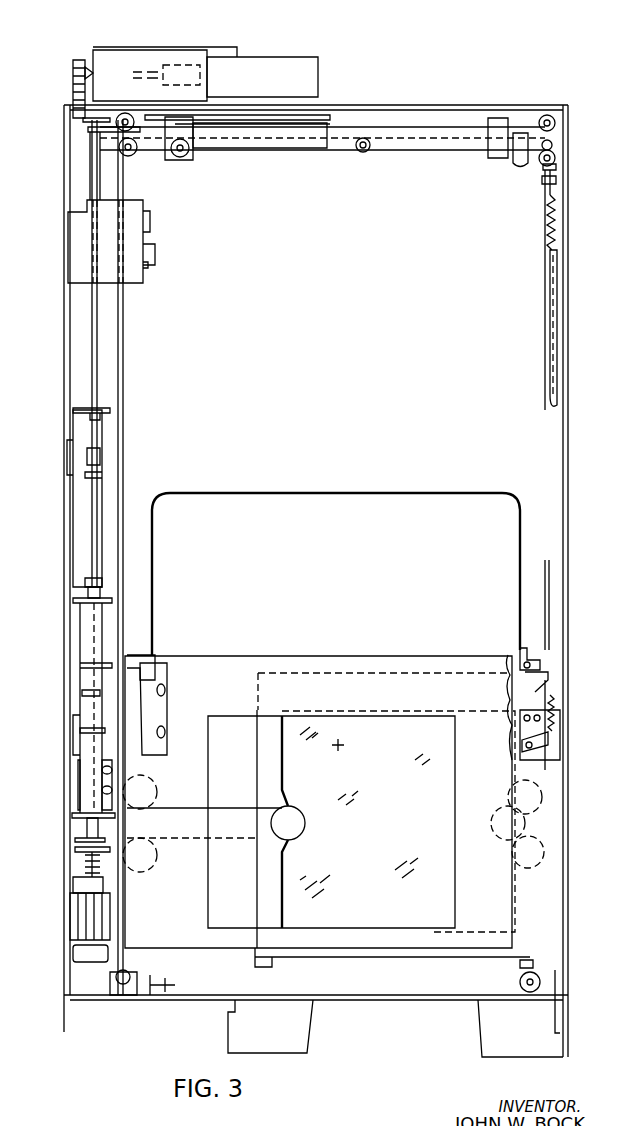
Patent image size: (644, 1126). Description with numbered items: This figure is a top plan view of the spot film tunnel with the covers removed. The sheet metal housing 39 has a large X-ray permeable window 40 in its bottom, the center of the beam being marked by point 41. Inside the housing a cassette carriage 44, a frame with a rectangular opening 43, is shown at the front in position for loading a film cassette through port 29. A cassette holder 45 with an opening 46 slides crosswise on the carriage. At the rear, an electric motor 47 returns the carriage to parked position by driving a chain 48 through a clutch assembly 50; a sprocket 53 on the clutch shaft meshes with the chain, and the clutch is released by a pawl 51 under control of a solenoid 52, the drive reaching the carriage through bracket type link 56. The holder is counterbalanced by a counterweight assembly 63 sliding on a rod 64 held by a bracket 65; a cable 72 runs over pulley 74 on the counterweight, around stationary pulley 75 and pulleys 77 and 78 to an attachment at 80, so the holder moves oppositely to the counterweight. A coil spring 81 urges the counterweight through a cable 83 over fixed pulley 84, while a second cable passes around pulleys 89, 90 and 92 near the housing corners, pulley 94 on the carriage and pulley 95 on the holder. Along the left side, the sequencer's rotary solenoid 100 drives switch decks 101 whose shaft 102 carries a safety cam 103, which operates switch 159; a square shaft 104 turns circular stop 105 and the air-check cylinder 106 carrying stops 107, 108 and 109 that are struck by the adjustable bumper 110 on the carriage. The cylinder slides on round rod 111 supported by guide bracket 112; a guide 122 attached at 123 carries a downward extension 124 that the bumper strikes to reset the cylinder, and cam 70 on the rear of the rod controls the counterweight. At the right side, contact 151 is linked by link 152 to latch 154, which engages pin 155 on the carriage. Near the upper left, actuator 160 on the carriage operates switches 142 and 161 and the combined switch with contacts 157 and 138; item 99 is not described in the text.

The port 29 is at (474, 1004).
The sheet metal housing 39 is at (66, 374).
The X-ray permeable window 40 is at (306, 494).
The center point 41 is at (340, 745).
The rectangular opening 43 is at (440, 808).
The cassette carriage 44 is at (214, 656).
The cassette holder 45 is at (364, 672).
The opening 46 is at (474, 710).
The electric motor 47 is at (318, 68).
The chain 48 is at (82, 62).
The clutch assembly 50 is at (128, 80).
The pawl 51 is at (150, 62).
The electromagnetic relay or solenoid 52 is at (186, 64).
The sprocket 53 is at (72, 78).
The bracket type link 56 is at (73, 716).
The counterweight assembly 63 is at (262, 135).
The rod 64 is at (410, 127).
The bracket 65 is at (498, 118).
The cam 70 is at (82, 130).
The cable 72 is at (158, 805).
The pulley 74 is at (186, 158).
The stationary pulley 75 is at (132, 156).
The pulley 77 is at (306, 828).
The pulley 78 is at (154, 858).
The bracket attachment point 80 is at (159, 984).
The coil spring 81 is at (556, 274).
The cable 83 is at (371, 148).
The fixed pulley 84 is at (556, 158).
The pulley 89 is at (554, 140).
The pulley 90 is at (549, 114).
The pulley 92 is at (120, 996).
The pulley 94 is at (514, 864).
The pulley 95 is at (500, 828).
The pin 99 is at (82, 694).
The rotary solenoid 100 is at (72, 956).
The switch decks 101 is at (70, 918).
The shaft 102 is at (72, 880).
The cam 103 is at (74, 850).
The square shaft 104 is at (74, 830).
The circular stop 105 is at (72, 815).
The air-check cylinder 106 is at (78, 773).
The long carriage travel stop 107 is at (80, 732).
The intermediate travel stop 108 is at (80, 664).
The short cassette carriage travel stop 109 is at (74, 604).
The bumper 110 is at (114, 772).
The round rod 111 is at (90, 553).
The guide bracket 112 is at (68, 462).
The guide 122 is at (84, 578).
The guide attachment point 123 is at (86, 592).
The downwardly projected extension 124 is at (112, 410).
The switch contact 138 is at (144, 282).
The switch 142 is at (151, 223).
The contact 151 is at (554, 750).
The link 152 is at (552, 616).
The latch 154 is at (544, 686).
The pin 155 is at (542, 667).
The contact 157 is at (148, 266).
The switch 159 is at (75, 888).
The switch actuator 160 is at (168, 700).
The switch 161 is at (155, 252).